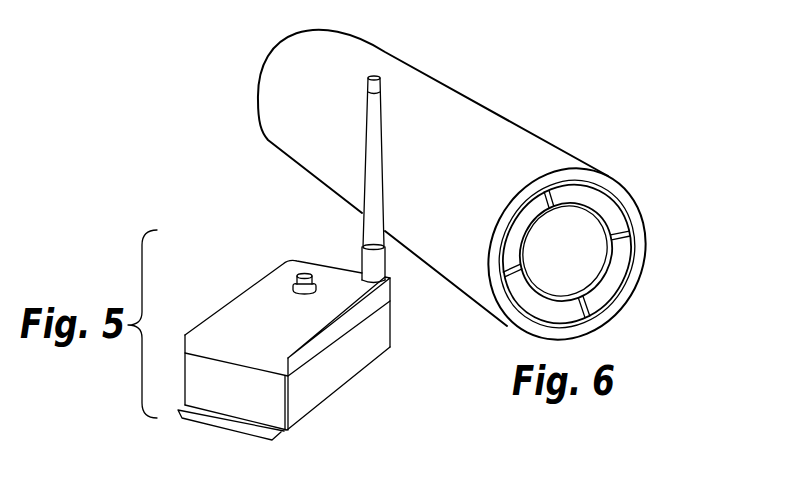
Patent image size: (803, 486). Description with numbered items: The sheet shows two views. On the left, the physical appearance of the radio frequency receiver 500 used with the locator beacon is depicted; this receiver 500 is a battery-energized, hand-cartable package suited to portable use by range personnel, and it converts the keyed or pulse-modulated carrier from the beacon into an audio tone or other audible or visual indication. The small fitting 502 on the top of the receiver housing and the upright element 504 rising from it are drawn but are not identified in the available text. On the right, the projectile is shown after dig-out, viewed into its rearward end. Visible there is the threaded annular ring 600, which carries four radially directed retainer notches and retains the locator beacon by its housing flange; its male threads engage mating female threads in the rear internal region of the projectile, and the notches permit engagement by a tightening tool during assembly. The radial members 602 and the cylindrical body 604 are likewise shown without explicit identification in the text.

In FIG. 5, the radio frequency receiver 500 is at (258, 279).
In FIG. 5, the button 502 is at (307, 275).
In FIG. 5, the antenna 504 is at (367, 127).
In FIG. 6, the threaded annular ring 600 is at (603, 202).
In FIG. 6, the support spokes 602 is at (625, 240).
In FIG. 6, the cylindrical housing 604 is at (457, 90).